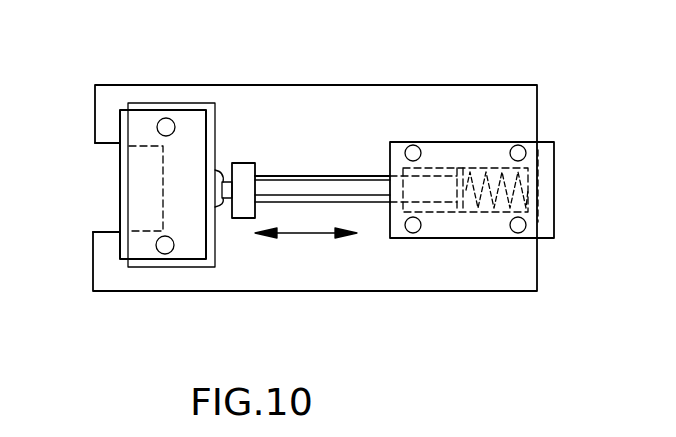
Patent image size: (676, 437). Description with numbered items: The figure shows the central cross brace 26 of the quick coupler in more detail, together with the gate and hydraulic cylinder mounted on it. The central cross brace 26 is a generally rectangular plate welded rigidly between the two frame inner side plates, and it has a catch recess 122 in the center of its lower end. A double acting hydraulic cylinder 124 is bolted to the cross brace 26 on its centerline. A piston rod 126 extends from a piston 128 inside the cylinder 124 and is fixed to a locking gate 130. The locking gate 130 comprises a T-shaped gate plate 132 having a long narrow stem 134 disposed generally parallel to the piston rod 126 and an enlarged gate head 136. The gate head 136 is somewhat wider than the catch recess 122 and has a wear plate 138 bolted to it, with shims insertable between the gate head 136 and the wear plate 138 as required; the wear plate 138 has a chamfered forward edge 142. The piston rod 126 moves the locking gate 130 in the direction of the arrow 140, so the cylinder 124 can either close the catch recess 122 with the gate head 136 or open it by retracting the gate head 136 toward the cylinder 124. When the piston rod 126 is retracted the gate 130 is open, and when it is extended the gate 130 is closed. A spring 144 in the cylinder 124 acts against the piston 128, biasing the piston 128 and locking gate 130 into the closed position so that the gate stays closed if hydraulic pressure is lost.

The central cross brace 26 is at (340, 292).
The catch recess 122 is at (98, 208).
The double acting hydraulic cylinder 124 is at (492, 142).
The piston rod 126 is at (332, 178).
The piston 128 is at (450, 142).
The locking gate 130 is at (248, 125).
The T-shaped gate plate 132 is at (267, 180).
The stem 134 is at (303, 175).
The gate head 136 is at (217, 127).
The wear plate 138 is at (145, 117).
The arrow 140 is at (315, 234).
The chamfered forward edge 142 is at (120, 162).
The spring 144 is at (540, 180).